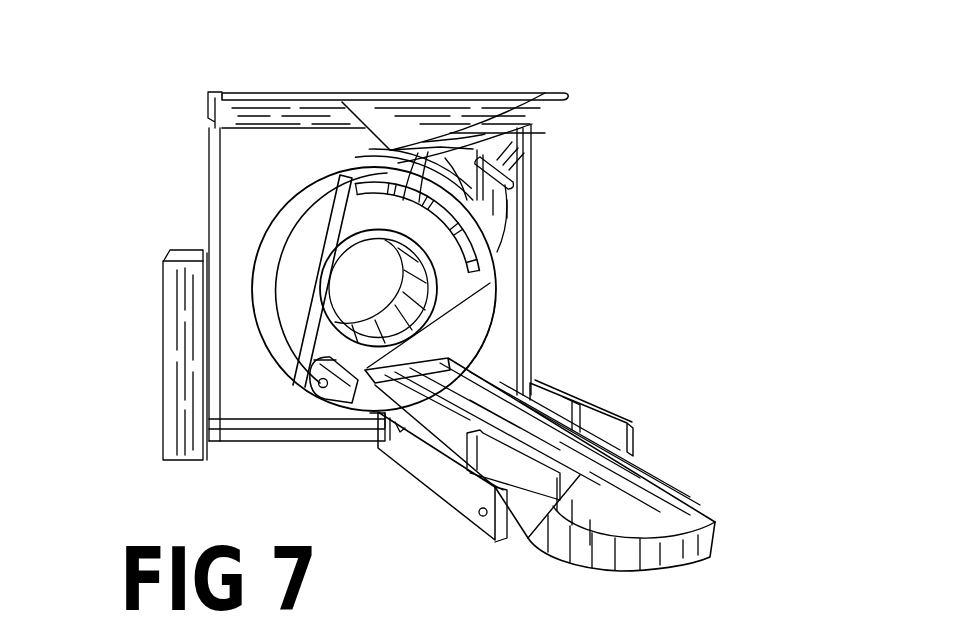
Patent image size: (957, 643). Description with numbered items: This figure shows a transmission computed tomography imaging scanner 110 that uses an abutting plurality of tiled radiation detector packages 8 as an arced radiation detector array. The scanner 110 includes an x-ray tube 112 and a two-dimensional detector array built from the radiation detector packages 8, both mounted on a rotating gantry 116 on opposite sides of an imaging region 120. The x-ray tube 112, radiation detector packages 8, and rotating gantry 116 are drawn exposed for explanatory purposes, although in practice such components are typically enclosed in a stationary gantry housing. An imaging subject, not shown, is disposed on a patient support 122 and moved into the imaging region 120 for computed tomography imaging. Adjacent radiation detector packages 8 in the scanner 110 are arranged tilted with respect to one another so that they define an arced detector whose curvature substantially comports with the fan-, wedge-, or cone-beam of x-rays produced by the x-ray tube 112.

The transmission computed tomography imaging scanner 110 is at (72, 80).
The radiation detector packages 8 is at (534, 130).
The rotating gantry 116 is at (323, 218).
The imaging region 120 is at (386, 272).
The x-ray tube 112 is at (327, 402).
The patient support 122 is at (530, 532).